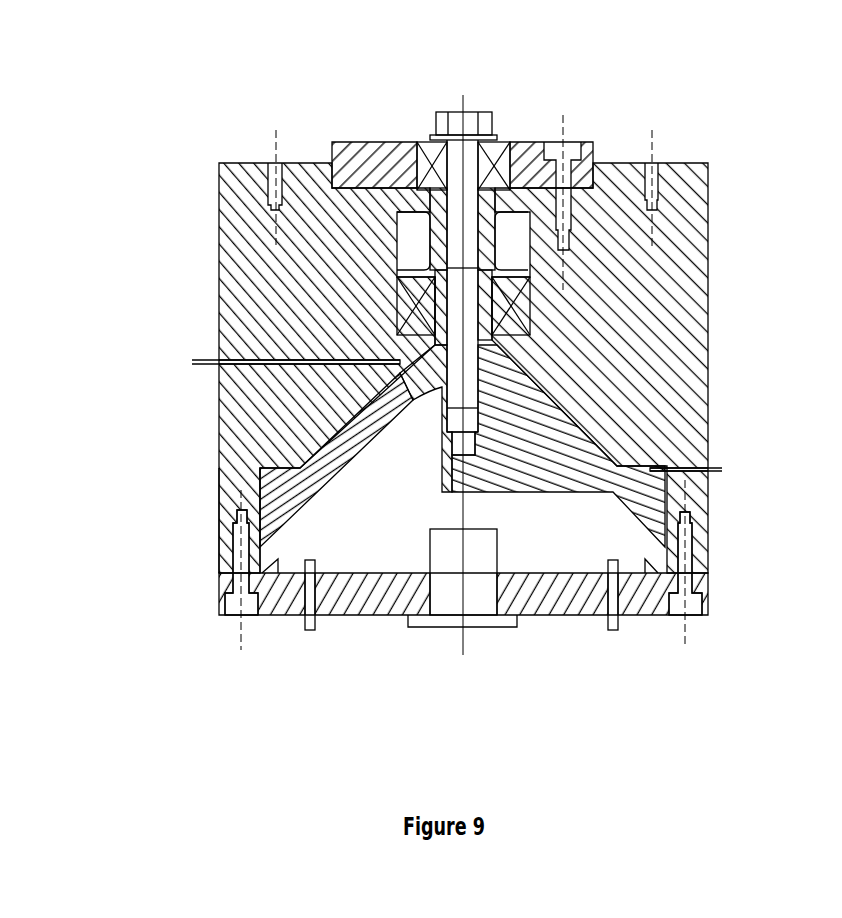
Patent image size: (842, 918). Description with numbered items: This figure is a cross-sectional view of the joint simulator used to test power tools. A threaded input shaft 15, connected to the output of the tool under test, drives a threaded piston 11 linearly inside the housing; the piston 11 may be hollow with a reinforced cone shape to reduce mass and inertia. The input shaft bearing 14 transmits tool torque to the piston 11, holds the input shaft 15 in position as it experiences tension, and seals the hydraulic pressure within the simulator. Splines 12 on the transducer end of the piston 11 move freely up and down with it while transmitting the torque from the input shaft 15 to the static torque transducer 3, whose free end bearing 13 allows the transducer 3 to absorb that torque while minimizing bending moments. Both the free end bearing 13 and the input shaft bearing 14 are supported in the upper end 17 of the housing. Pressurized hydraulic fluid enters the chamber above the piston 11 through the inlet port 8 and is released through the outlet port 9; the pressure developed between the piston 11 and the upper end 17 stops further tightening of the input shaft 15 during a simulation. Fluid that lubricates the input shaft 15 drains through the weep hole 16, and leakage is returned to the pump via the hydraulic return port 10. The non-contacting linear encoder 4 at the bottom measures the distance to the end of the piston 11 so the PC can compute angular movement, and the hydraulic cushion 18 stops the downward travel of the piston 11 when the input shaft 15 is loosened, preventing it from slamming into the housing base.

The static torque transducer 3 is at (400, 253).
The non-contacting linear encoder 4 is at (449, 600).
The inlet port 8 is at (218, 368).
The outlet port 9 is at (707, 472).
The hydraulic return port 10 is at (627, 618).
The piston 11 is at (377, 420).
The splines 12 is at (488, 300).
The free end bearing 13 is at (400, 326).
The input shaft bearing 14 is at (437, 180).
The threaded input shaft 15 is at (473, 112).
The weep hole 16 is at (476, 431).
The upper end of the housing 17 is at (265, 443).
The hydraulic cushion 18 is at (263, 615).